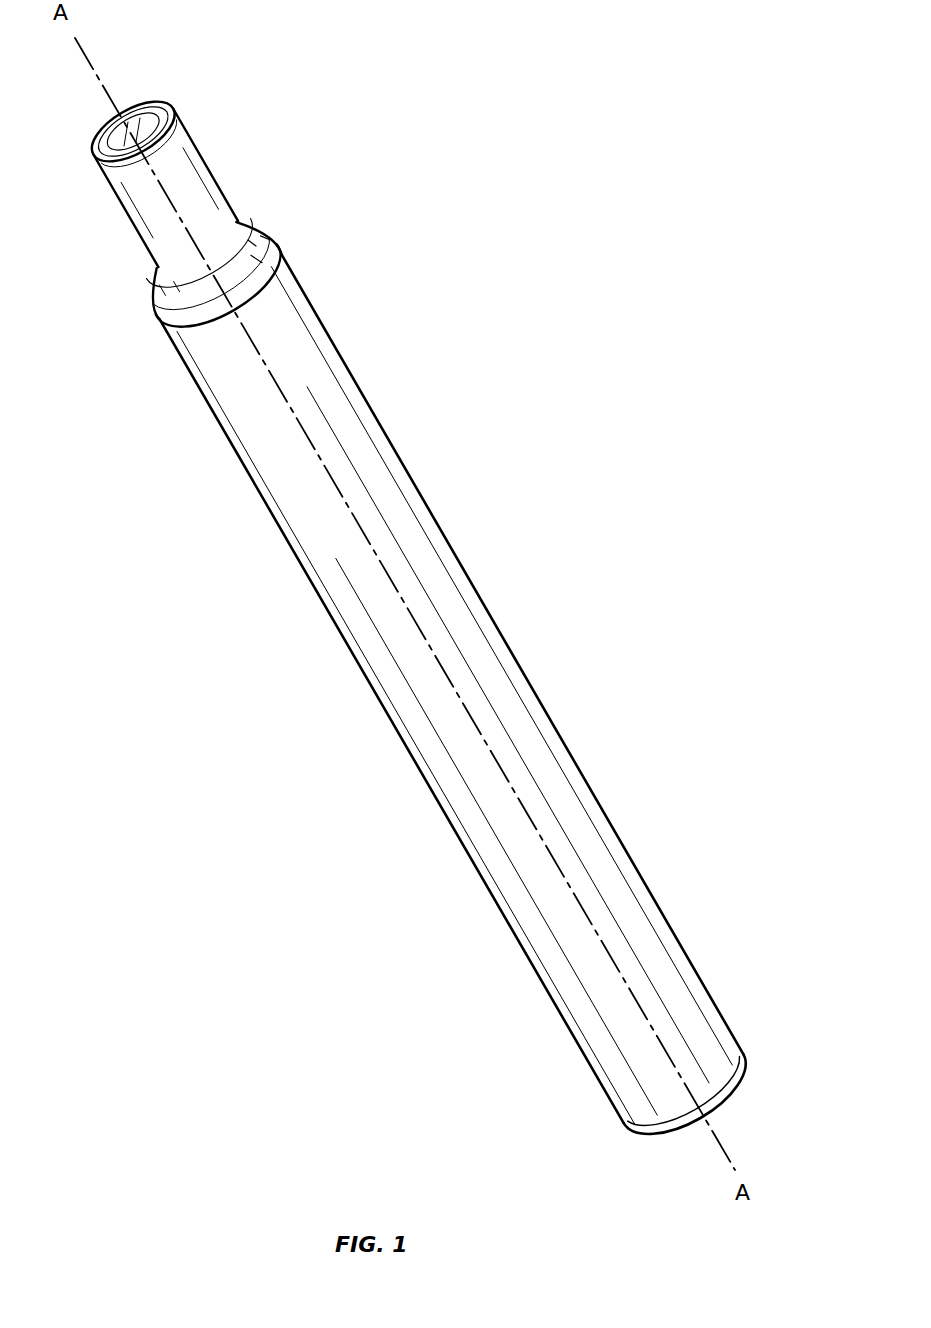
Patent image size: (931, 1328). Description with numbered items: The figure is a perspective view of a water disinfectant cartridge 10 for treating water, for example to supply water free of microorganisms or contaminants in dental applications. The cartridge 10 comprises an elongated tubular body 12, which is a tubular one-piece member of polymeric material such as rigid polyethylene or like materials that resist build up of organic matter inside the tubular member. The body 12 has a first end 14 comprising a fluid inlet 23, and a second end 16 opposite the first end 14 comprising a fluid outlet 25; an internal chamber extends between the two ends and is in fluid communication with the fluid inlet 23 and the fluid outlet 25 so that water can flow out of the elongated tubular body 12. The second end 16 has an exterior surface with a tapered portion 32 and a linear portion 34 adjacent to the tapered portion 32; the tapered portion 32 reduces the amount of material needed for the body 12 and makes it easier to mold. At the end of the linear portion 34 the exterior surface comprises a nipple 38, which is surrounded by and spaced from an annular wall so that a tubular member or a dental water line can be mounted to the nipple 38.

The cartridge 10 is at (553, 302).
The elongated tubular body 12 is at (413, 490).
The first end 14 is at (730, 1030).
The second end 16 is at (287, 268).
The fluid inlet 23 is at (725, 1100).
The fluid outlet 25 is at (124, 107).
The tapered portion 32 is at (252, 242).
The linear portion 34 is at (193, 183).
The nipple 38 is at (158, 102).